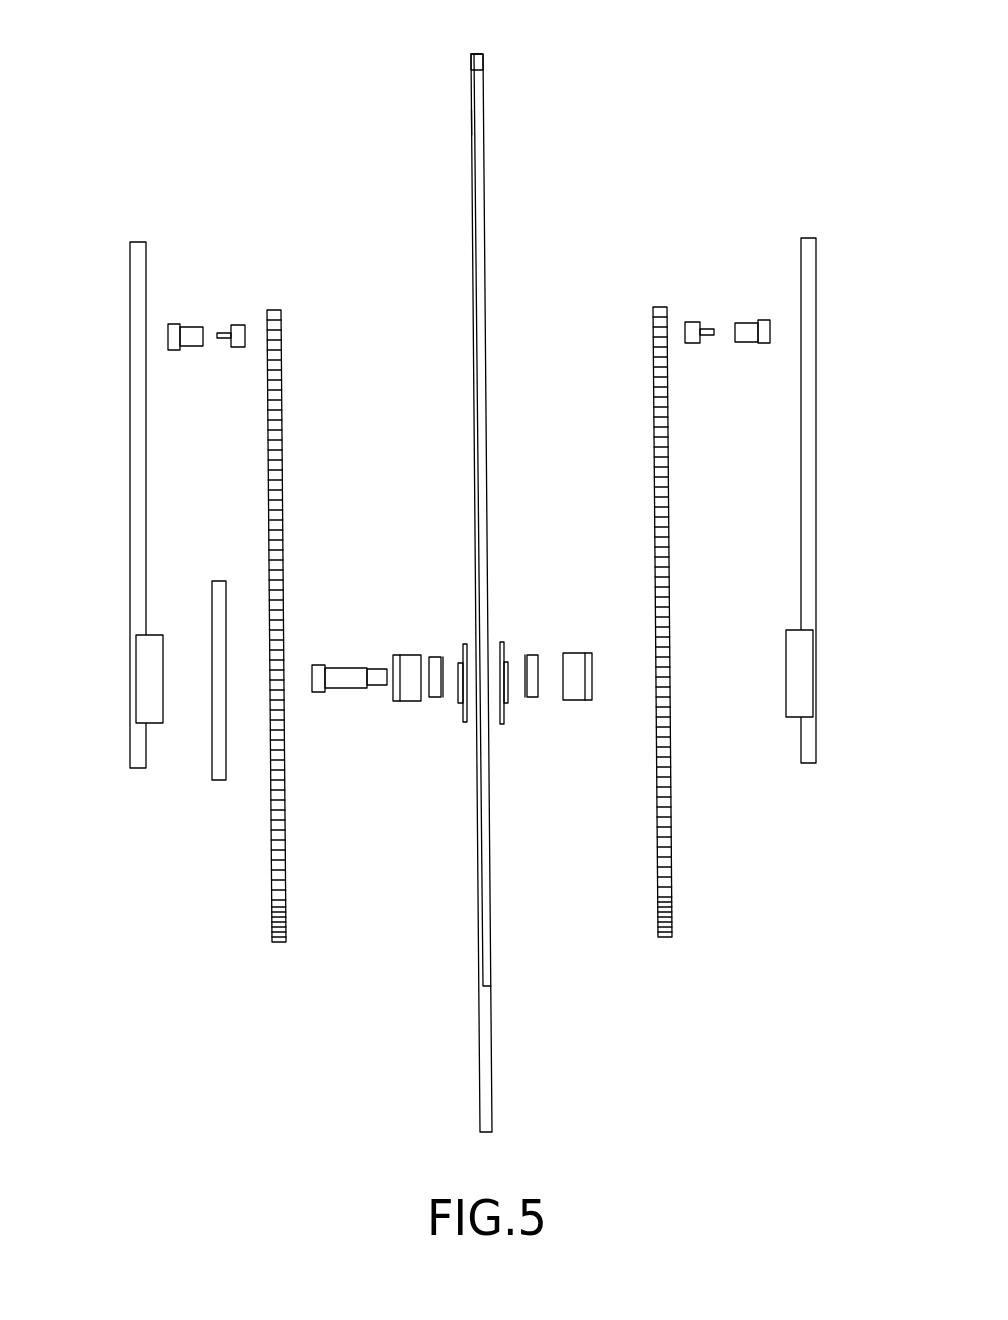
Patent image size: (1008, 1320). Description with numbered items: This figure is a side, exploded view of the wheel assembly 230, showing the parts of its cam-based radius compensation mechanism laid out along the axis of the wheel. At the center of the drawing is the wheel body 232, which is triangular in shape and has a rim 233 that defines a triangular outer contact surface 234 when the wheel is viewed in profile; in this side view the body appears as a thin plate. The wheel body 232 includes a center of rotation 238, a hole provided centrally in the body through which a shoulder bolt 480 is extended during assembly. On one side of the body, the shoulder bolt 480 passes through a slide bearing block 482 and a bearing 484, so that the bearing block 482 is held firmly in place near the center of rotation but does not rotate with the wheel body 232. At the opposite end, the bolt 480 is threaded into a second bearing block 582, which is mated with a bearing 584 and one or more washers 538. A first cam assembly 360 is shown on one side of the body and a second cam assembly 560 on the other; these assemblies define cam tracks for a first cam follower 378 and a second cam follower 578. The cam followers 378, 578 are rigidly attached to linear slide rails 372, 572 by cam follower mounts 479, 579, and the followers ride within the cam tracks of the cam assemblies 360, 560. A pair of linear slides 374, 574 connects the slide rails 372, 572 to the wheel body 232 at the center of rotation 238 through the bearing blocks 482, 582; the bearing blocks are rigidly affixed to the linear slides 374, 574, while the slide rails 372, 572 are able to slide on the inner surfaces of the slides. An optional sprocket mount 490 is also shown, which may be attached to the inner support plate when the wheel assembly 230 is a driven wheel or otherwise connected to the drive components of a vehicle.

The wheel assembly 230 is at (624, 126).
The wheel body 232 is at (490, 96).
The rim 233 is at (471, 120).
The triangular outer contact surface 234 is at (472, 65).
The center of rotation 238 is at (465, 722).
The first cam assembly 360 is at (278, 958).
The linear slide rail 372 is at (129, 270).
The linear slide 374 is at (160, 723).
The first cam follower 378 is at (237, 325).
The cam follower mount 479 is at (188, 325).
The shoulder bolt 480 is at (333, 665).
The slide bearing block 482 is at (410, 702).
The bearing 484 is at (437, 657).
The sprocket mount 490 is at (224, 780).
The washer 538 is at (503, 724).
The second cam assembly 560 is at (665, 940).
The linear slide rail 572 is at (801, 268).
The linear slide 574 is at (795, 718).
The second cam follower 578 is at (692, 322).
The cam follower mount 579 is at (747, 343).
The second bearing block 582 is at (585, 700).
The bearing 584 is at (532, 655).